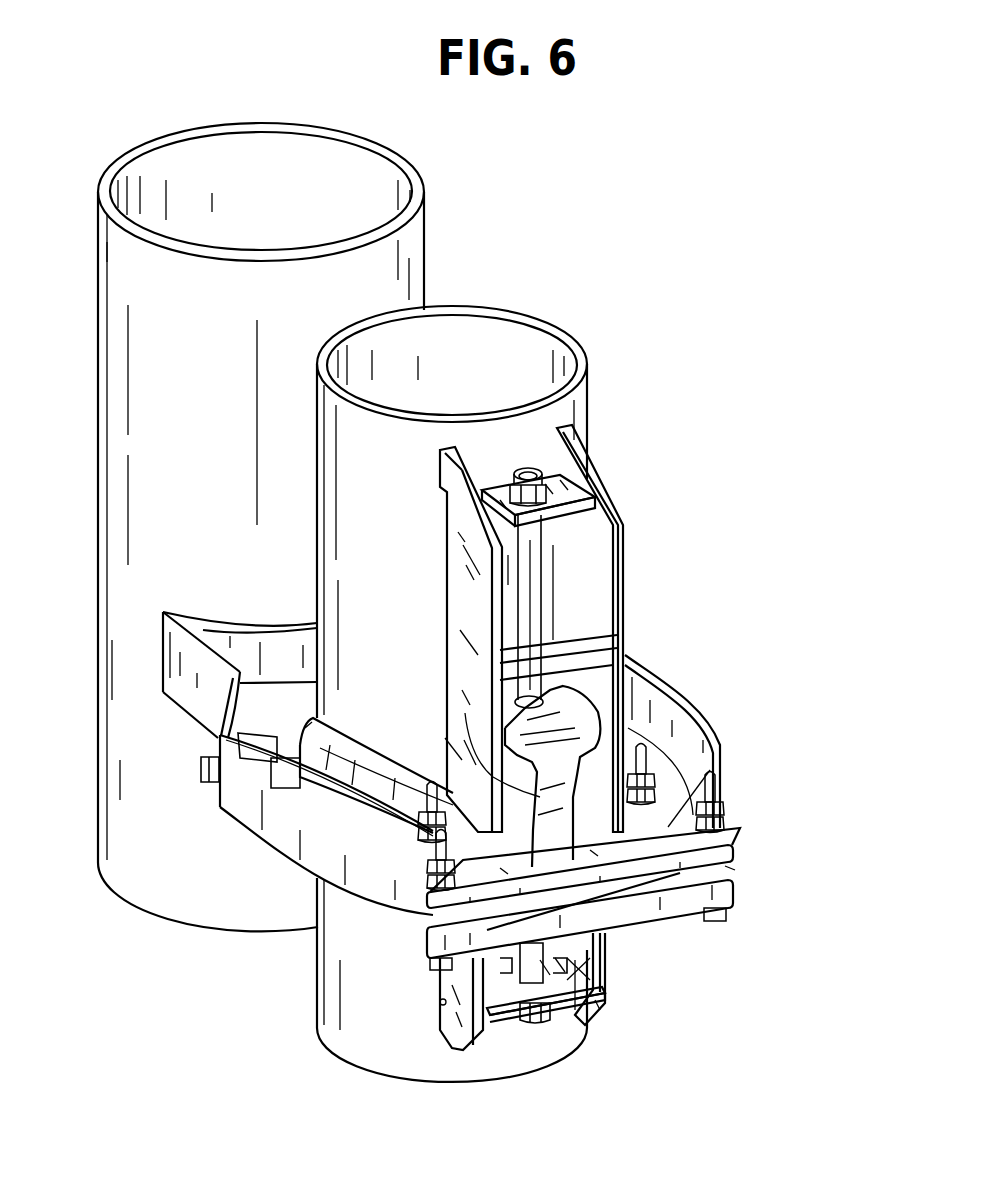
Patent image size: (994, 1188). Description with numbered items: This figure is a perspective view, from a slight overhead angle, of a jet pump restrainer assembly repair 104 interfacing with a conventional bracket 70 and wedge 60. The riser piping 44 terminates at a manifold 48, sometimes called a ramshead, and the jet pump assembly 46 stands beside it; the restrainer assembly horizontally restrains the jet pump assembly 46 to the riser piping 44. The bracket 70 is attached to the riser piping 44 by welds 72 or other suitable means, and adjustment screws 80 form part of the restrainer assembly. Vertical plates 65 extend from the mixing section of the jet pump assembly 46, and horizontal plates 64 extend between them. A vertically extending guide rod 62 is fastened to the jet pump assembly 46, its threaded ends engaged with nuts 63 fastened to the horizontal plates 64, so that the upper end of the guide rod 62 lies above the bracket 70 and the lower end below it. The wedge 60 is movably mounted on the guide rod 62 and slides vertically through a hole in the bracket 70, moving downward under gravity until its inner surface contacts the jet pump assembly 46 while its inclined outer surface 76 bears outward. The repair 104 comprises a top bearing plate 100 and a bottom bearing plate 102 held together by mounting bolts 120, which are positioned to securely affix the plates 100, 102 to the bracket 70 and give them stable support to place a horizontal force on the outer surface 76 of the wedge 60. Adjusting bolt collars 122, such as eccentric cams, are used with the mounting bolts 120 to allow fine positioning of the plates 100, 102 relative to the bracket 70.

The riser piping 44 is at (98, 299).
The jet pump assembly 46 is at (589, 400).
The manifold 48 is at (337, 743).
The wedge 60 is at (557, 706).
The guide rod 62 is at (528, 584).
The nuts 63 is at (515, 476).
The horizontal plates 64 is at (567, 488).
The vertical plates 65 is at (450, 474).
The bracket 70 is at (280, 876).
The welds 72 is at (238, 612).
The outer surface 76 is at (492, 738).
The adjustment screws 80 is at (201, 775).
The top bearing plate 100 is at (735, 850).
The bottom bearing plate 102 is at (663, 905).
The restrainer assembly repair 104 is at (830, 747).
The mounting bolts 120 is at (430, 828).
The adjusting bolt collars 122 is at (735, 868).